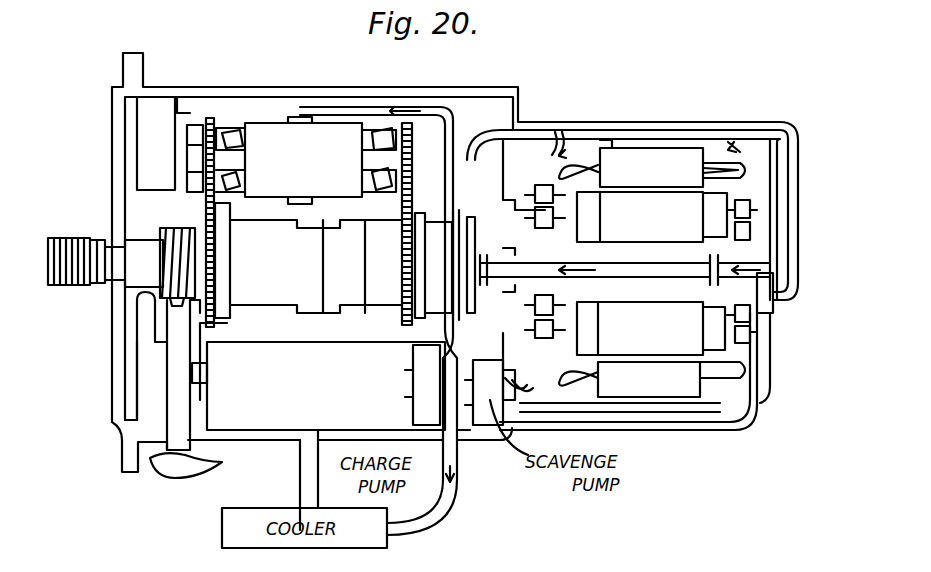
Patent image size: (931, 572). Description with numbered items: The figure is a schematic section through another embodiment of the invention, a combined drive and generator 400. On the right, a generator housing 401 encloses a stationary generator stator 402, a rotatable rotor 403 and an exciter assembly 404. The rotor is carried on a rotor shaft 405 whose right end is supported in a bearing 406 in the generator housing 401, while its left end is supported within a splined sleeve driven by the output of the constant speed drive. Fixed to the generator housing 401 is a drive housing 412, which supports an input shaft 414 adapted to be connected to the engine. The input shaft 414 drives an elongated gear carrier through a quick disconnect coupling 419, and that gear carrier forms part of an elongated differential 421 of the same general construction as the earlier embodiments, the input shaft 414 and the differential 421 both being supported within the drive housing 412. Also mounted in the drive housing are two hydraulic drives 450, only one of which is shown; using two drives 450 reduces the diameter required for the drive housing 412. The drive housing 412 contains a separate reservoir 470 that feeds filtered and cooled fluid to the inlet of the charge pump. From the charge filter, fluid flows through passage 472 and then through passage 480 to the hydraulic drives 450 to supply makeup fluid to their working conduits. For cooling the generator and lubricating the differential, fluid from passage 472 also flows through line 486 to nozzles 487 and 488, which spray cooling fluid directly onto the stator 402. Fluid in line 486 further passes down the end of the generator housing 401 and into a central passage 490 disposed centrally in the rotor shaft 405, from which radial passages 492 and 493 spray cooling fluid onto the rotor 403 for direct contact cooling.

The drive and generator 400 is at (562, 494).
The generator housing 401 is at (556, 130).
The generator stator 402 is at (672, 148).
The rotor 403 is at (690, 204).
The exciter assembly 404 is at (756, 330).
The rotor shaft 405 is at (650, 302).
The bearing 406 is at (772, 235).
The drive housing 412 is at (253, 440).
The input shaft 414 is at (66, 236).
The quick disconnect coupling 419 is at (160, 304).
The differential 421 is at (312, 316).
The hydraulic drive 450 is at (276, 116).
The reservoir 470 is at (318, 386).
The passage 472 is at (462, 252).
The passage 480 is at (364, 108).
The line 486 is at (538, 128).
The nozzle 487 is at (606, 140).
The nozzle 488 is at (735, 146).
The central passage 490 is at (668, 276).
The radial passage 492 is at (709, 270).
The radial passage 493 is at (580, 262).